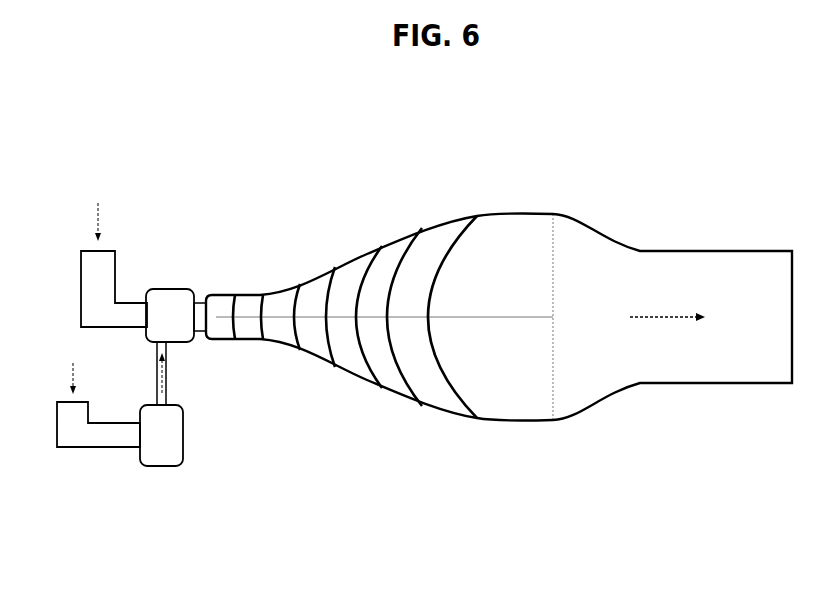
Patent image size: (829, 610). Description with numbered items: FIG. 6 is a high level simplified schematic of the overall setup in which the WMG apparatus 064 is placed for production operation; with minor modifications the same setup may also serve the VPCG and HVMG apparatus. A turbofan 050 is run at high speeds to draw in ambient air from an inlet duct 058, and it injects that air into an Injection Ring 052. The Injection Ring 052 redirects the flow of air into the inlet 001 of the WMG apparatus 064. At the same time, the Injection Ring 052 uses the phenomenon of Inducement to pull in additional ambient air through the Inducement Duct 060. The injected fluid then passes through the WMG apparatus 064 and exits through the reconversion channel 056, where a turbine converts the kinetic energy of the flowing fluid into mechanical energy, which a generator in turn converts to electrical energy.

The Inducement Duct 060 is at (100, 292).
The inlet duct 058 is at (72, 427).
The turbofan 050 is at (163, 452).
The Injection Ring 052 is at (167, 310).
The inlet 001 is at (207, 320).
The WMG apparatus 064 is at (503, 291).
The reconversion channel 056 is at (688, 368).